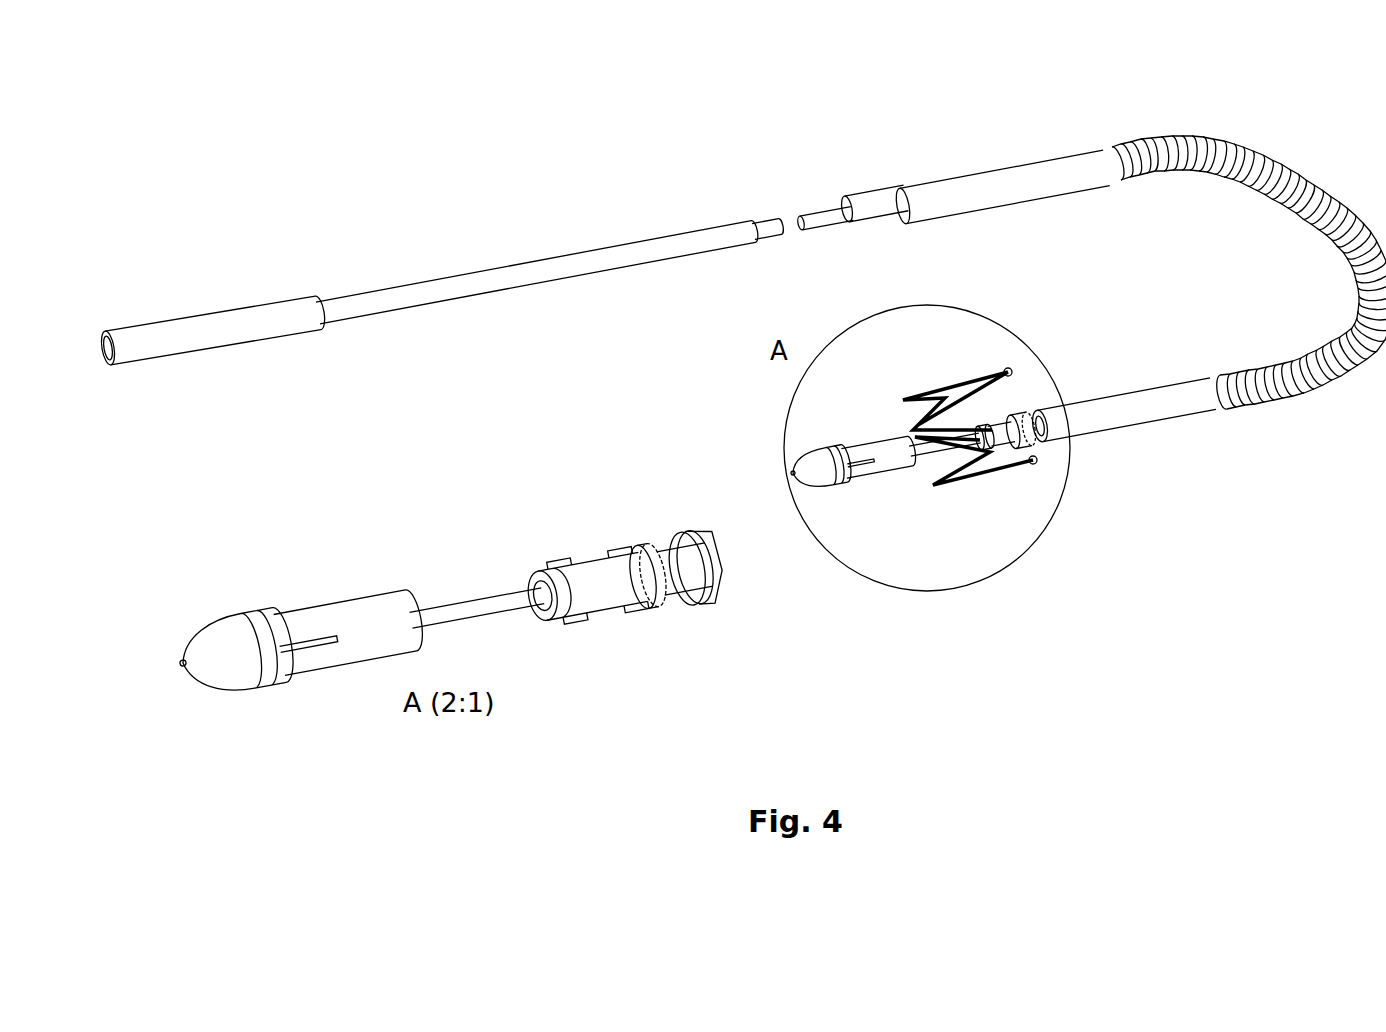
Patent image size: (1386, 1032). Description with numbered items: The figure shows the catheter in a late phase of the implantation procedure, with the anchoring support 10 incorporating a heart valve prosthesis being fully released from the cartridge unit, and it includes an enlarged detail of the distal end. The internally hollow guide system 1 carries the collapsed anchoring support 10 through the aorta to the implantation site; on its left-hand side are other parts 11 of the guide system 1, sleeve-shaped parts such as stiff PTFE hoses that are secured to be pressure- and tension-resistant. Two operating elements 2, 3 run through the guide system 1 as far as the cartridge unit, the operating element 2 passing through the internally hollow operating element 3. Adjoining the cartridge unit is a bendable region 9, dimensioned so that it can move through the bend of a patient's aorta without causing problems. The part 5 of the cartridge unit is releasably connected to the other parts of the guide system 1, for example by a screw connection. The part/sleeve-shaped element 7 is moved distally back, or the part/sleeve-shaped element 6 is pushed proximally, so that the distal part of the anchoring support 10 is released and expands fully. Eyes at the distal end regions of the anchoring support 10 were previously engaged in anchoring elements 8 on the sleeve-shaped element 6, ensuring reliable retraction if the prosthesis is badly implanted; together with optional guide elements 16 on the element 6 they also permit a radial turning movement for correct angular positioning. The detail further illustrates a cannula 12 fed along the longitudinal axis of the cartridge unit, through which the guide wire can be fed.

The guide system 1 is at (1043, 118).
The operating element 2 is at (818, 216).
The operating element 3 is at (875, 205).
The part of the cartridge unit 5 is at (890, 465).
The part/sleeve-shaped element 6 is at (1000, 425).
The part/sleeve-shaped element 7 is at (1141, 413).
The anchoring elements 8 is at (628, 553).
The bendable region 9 is at (1320, 190).
The anchoring support 10 is at (933, 400).
The other parts of the guide system 11 is at (205, 322).
The cannula 12 is at (462, 605).
The guide elements 16 is at (572, 625).